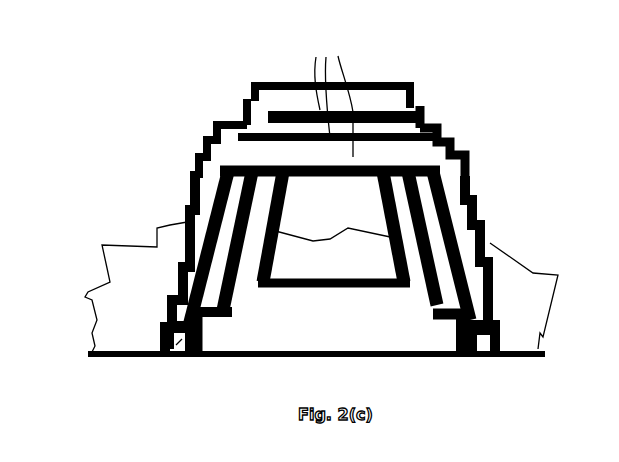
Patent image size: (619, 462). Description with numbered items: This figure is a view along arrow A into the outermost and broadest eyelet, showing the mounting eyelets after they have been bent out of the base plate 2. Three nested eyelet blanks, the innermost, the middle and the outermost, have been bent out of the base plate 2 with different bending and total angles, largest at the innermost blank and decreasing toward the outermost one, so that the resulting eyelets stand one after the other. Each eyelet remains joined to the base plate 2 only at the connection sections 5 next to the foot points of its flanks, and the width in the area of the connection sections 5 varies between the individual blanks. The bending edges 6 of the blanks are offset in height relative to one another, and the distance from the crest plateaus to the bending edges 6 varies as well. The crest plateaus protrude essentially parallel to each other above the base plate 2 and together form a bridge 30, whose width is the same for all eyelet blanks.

The base plate 2 is at (523, 348).
The connection sections 5 is at (157, 357).
The bending edges 6 is at (160, 355).
The bridge 30 is at (330, 97).